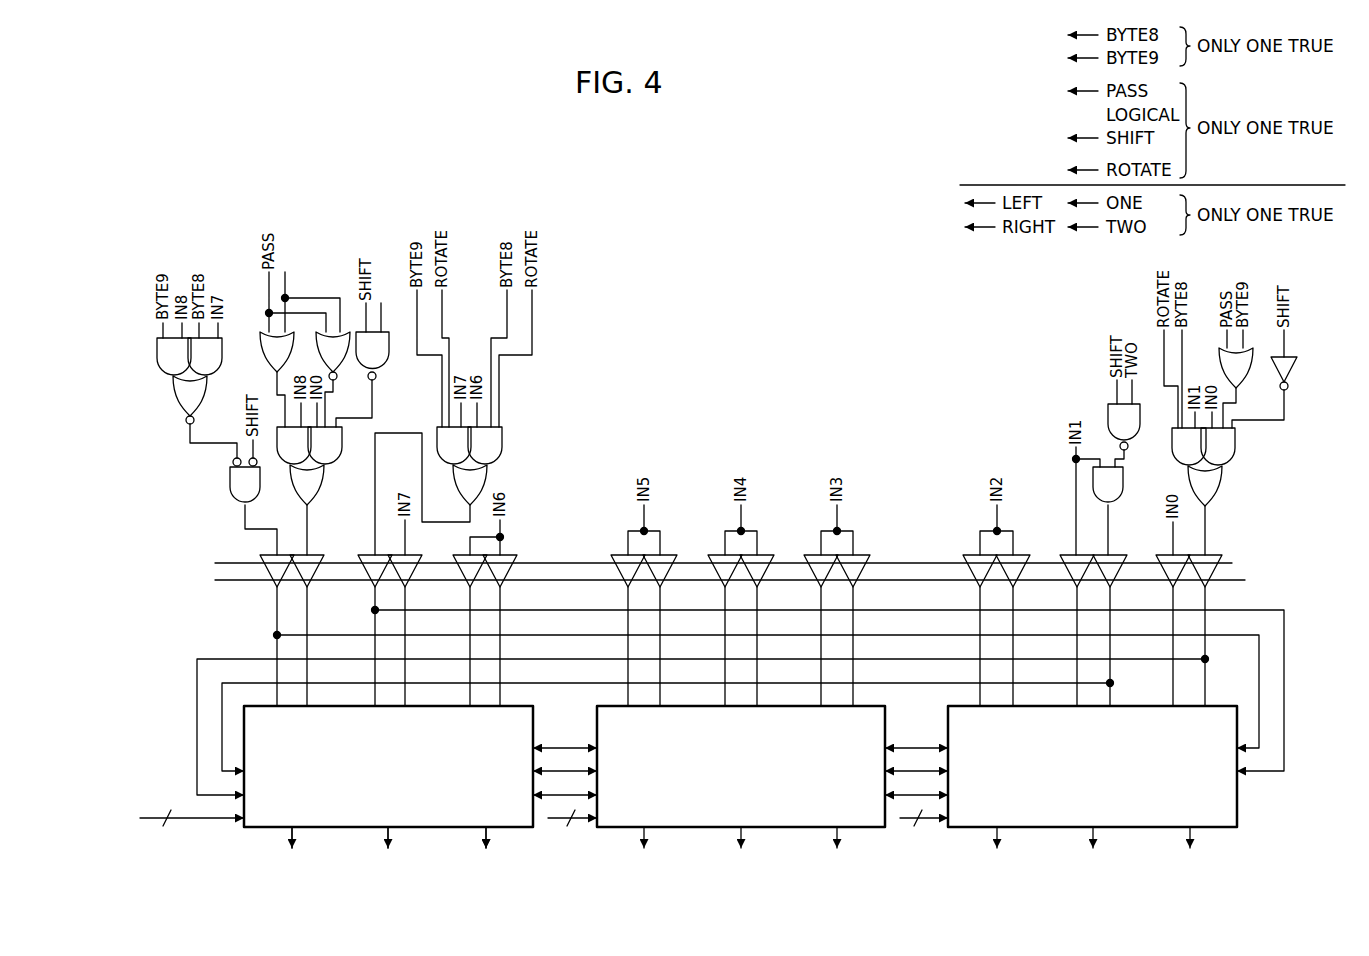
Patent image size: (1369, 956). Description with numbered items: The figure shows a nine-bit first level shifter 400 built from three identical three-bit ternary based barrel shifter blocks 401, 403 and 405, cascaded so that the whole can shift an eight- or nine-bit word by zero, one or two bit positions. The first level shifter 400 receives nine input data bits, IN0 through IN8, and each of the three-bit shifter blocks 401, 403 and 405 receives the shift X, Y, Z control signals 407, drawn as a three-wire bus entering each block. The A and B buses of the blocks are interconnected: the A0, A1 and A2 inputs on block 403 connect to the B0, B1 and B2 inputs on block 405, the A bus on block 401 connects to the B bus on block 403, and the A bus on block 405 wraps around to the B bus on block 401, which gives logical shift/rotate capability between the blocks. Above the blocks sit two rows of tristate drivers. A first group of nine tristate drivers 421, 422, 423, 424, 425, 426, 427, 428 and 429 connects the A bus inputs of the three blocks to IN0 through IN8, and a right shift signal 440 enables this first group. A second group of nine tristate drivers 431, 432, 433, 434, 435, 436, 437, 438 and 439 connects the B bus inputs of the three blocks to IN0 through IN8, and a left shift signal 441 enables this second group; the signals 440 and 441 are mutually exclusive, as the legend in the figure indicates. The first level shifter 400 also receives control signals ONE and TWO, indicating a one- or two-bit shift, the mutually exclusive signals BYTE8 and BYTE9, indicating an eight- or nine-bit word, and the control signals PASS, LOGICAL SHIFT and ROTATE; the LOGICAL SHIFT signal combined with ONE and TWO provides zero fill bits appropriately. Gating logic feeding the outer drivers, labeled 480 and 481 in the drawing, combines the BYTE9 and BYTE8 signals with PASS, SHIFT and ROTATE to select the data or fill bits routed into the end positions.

The first level shifter 400 is at (714, 250).
The 3-bit ternary based barrel shifter block 401 is at (428, 829).
The 3-bit ternary based barrel shifter block 403 is at (780, 829).
The 3-bit ternary based barrel shifter block 405 is at (1131, 829).
The shift X, Y, Z control signals 407 is at (152, 817).
The tristate driver 421 is at (1203, 586).
The tristate driver 422 is at (1113, 585).
The tristate driver 423 is at (1016, 585).
The tristate driver 424 is at (856, 585).
The tristate driver 425 is at (760, 585).
The tristate driver 426 is at (663, 585).
The tristate driver 427 is at (503, 585).
The tristate driver 428 is at (408, 585).
The tristate driver 429 is at (311, 585).
The tristate driver 431 is at (1162, 557).
The tristate driver 432 is at (1066, 557).
The tristate driver 433 is at (969, 557).
The tristate driver 434 is at (810, 557).
The tristate driver 435 is at (714, 557).
The tristate driver 436 is at (617, 557).
The tristate driver 437 is at (459, 557).
The tristate driver 438 is at (362, 557).
The tristate driver 439 is at (275, 584).
The right shift signal 440 is at (1228, 582).
The left shift signal 441 is at (1234, 562).
The BYTE9 control signal 480 is at (285, 214).
The BYTE8 control signal 481 is at (381, 244).